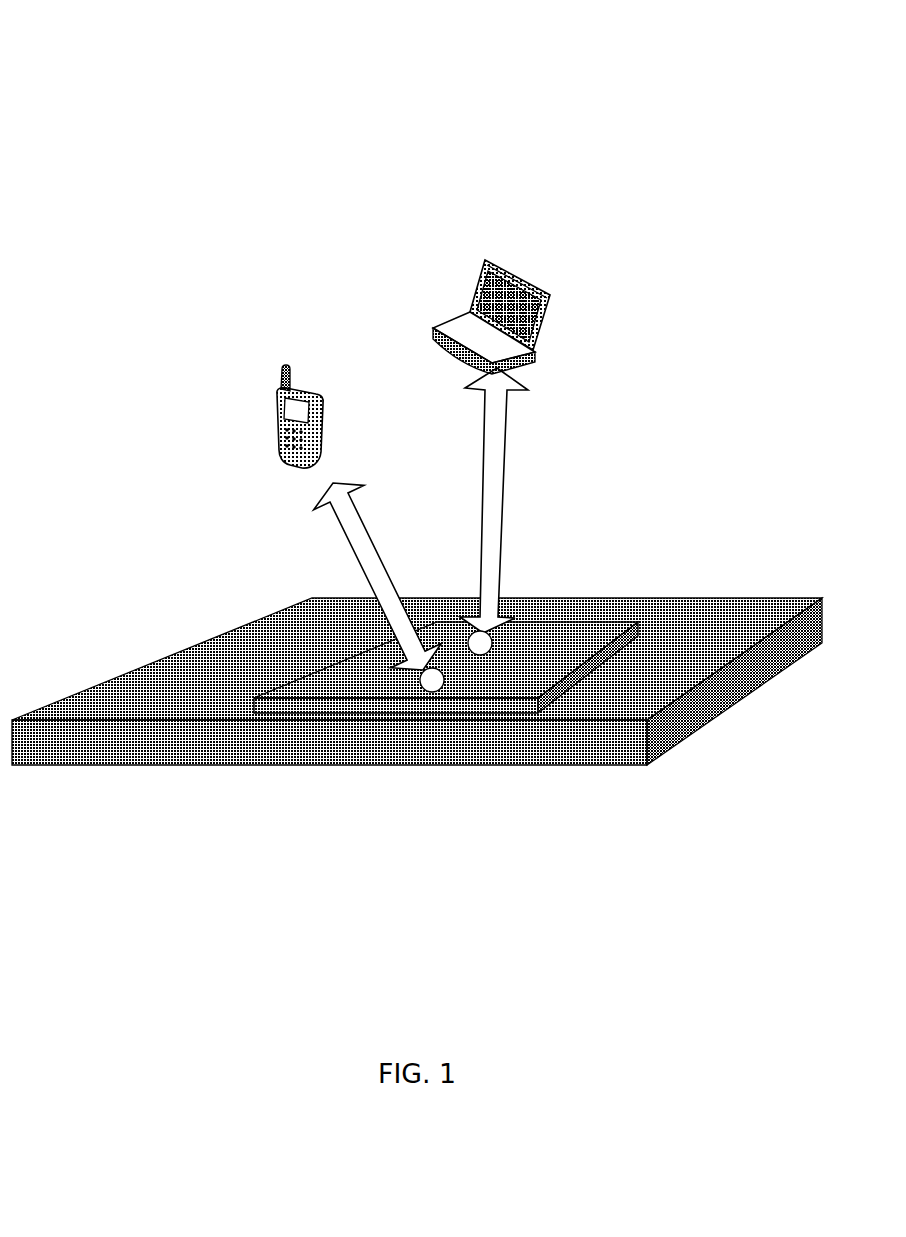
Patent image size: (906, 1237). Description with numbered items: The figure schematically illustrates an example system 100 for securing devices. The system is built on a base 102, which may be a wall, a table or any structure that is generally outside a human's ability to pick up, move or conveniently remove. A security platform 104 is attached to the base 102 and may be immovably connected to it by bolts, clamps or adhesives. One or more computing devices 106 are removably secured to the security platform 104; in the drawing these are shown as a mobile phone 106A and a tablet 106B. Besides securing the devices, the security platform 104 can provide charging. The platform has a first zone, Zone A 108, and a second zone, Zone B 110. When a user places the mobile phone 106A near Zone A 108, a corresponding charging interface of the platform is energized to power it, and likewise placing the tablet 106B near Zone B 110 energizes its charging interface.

The system 100 is at (101, 38).
The base 102 is at (417, 727).
The security platform 104 is at (405, 790).
The computing devices 106 is at (458, 158).
The mobile phone 106A is at (259, 402).
The tablet 106B is at (477, 301).
The Zone A 108 is at (508, 799).
The Zone B 110 is at (592, 781).